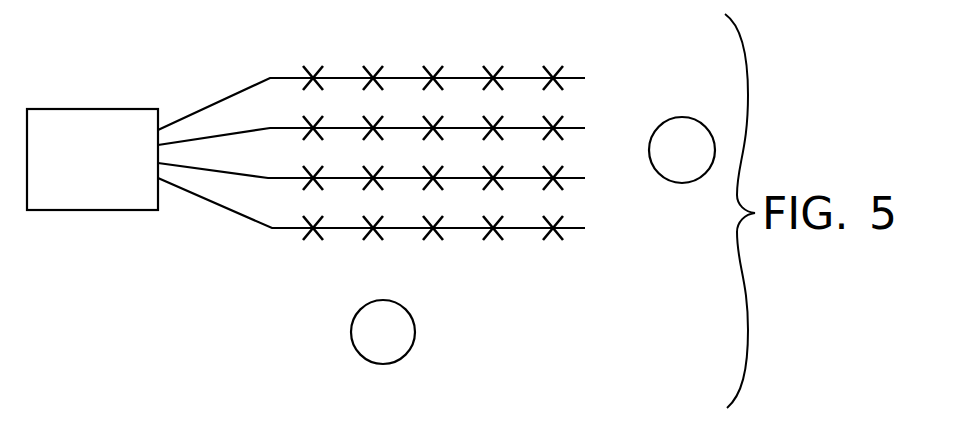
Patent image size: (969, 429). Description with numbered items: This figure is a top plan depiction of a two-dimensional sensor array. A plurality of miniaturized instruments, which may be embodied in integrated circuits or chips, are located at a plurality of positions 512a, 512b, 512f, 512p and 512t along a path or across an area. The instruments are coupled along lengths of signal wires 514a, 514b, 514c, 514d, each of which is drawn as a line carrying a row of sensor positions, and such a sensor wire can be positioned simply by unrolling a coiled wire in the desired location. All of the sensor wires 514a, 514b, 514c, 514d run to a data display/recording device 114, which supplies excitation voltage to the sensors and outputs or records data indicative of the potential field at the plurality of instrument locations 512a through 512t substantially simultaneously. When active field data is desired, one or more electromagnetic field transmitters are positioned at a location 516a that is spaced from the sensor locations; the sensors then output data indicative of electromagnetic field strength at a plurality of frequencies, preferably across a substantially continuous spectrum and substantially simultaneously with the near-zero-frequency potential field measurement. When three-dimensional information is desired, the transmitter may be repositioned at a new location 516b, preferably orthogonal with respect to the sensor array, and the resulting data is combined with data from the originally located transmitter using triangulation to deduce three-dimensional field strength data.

The data display/recording device 114 is at (80, 210).
The instrument position 512a is at (315, 72).
The instrument position 512b is at (373, 72).
The instrument position 512f is at (308, 125).
The instrument position 512p is at (310, 232).
The instrument position 512t is at (550, 232).
The signal wire 514a is at (573, 78).
The signal wire 514b is at (585, 128).
The signal wire 514c is at (585, 178).
The signal wire 514d is at (575, 228).
The transmitter location 516a is at (413, 340).
The repositioned transmitter location 516b is at (685, 122).